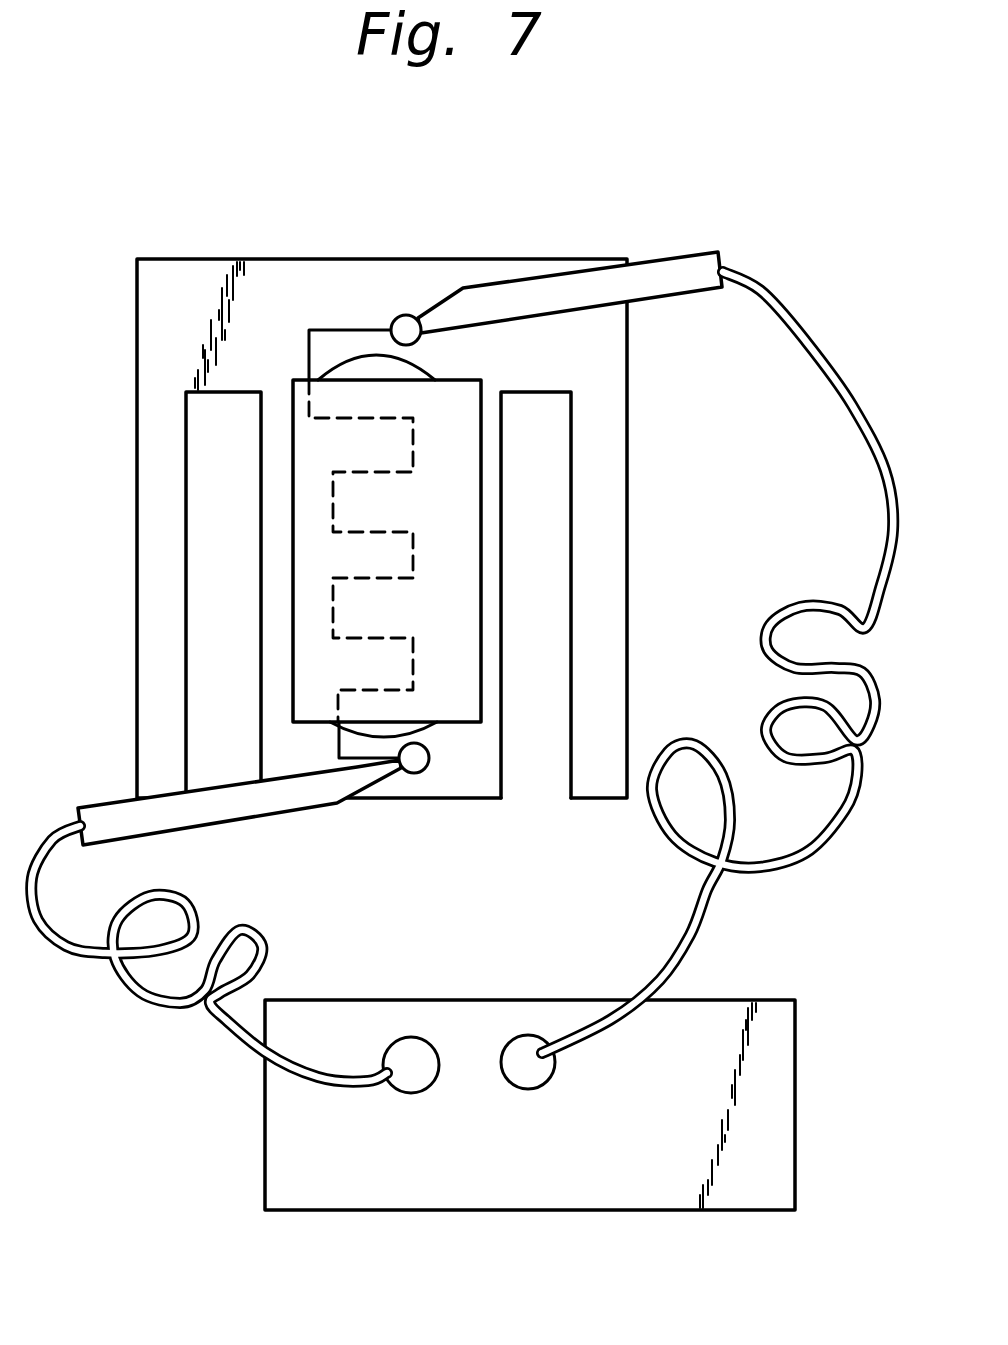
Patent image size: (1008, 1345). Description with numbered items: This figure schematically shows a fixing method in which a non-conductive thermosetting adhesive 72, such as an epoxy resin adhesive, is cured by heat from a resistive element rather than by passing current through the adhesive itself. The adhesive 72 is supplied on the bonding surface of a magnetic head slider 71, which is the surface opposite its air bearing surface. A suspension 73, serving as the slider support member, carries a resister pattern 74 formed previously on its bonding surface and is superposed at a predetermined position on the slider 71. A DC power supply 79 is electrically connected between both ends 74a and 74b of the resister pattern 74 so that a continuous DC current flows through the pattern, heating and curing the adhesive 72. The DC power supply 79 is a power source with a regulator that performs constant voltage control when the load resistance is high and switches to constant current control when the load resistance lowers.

The magnetic head slider 71 is at (305, 588).
The non-conductive thermosetting adhesive 72 is at (350, 364).
The suspension 73 is at (158, 326).
The resister pattern 74 is at (333, 488).
The end of the resister pattern 74a is at (404, 314).
The end of the resister pattern 74b is at (416, 773).
The DC power supply 79 is at (587, 1192).